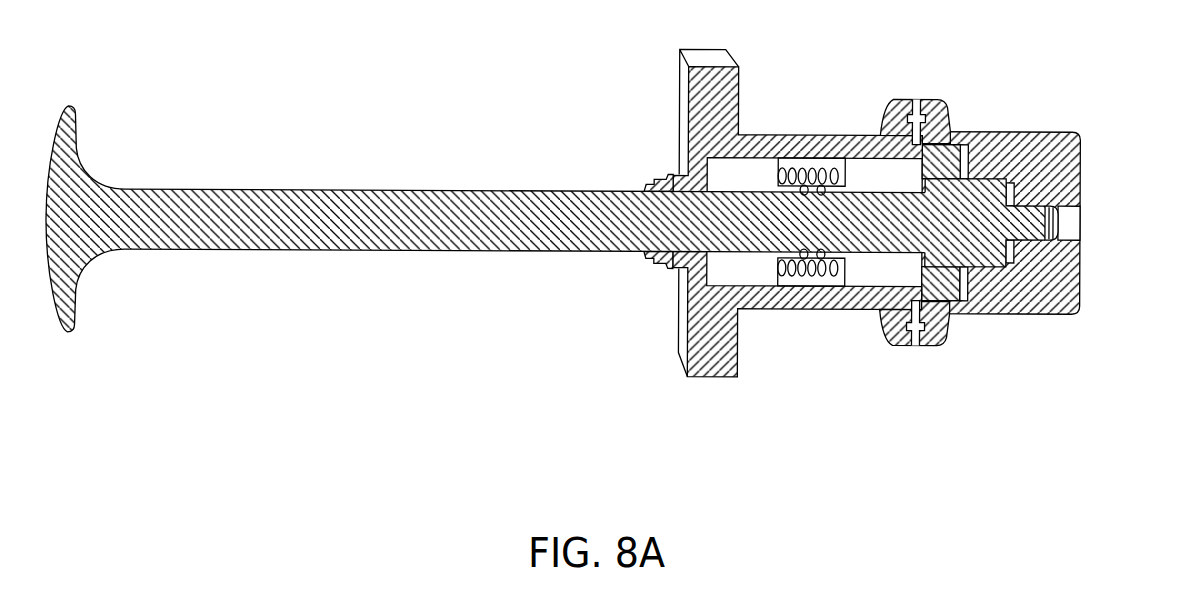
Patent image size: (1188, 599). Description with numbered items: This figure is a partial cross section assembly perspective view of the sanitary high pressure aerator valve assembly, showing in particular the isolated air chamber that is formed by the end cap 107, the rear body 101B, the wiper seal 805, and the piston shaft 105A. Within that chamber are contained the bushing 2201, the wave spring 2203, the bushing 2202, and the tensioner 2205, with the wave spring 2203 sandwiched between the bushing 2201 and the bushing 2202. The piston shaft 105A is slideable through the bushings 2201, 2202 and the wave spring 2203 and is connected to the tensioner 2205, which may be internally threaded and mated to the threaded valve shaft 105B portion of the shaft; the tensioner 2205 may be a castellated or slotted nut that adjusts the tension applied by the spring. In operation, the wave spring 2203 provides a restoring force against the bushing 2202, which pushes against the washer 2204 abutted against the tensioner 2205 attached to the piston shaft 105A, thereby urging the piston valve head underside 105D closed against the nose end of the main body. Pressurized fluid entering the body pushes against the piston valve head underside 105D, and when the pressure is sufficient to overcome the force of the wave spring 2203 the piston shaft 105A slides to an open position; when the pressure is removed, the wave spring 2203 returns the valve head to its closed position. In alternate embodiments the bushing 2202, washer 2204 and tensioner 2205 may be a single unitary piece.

The piston shaft 105A is at (486, 221).
The threaded valve shaft 105B is at (1050, 176).
The piston valve head underside 105D is at (1097, 296).
The rear body 101B is at (693, 249).
The end cap 107 is at (1004, 191).
The wiper seal 805 is at (609, 168).
The bushing 2201 is at (797, 250).
The bushing 2202 is at (932, 266).
The wave spring 2203 is at (837, 157).
The washer 2204 is at (978, 95).
The tensioner 2205 is at (1014, 367).